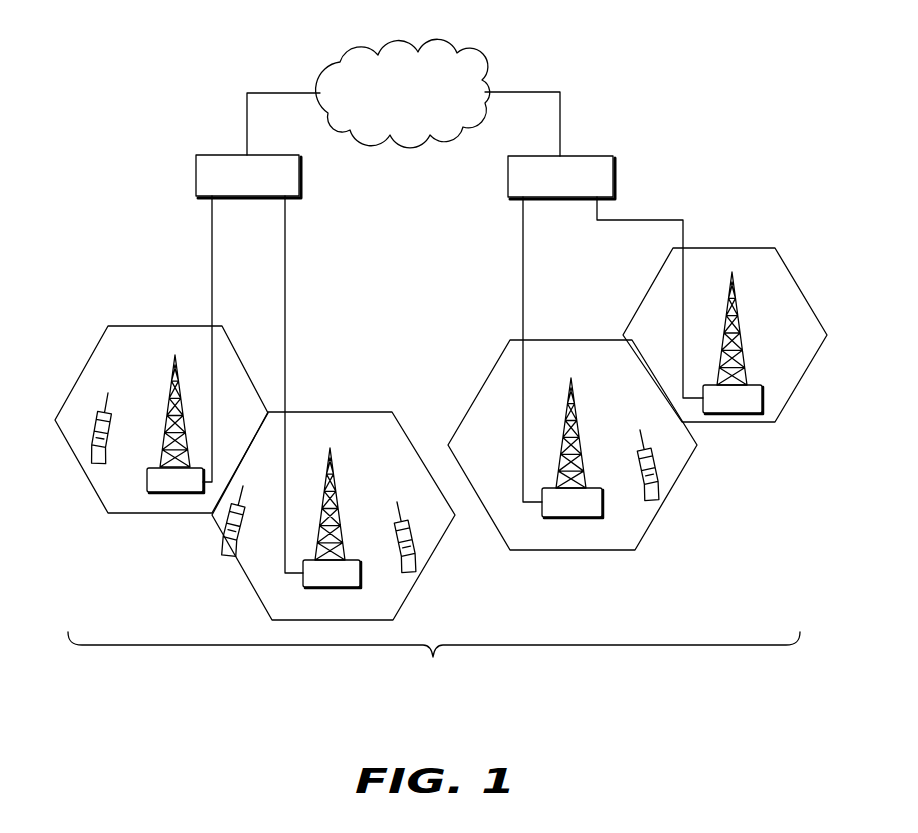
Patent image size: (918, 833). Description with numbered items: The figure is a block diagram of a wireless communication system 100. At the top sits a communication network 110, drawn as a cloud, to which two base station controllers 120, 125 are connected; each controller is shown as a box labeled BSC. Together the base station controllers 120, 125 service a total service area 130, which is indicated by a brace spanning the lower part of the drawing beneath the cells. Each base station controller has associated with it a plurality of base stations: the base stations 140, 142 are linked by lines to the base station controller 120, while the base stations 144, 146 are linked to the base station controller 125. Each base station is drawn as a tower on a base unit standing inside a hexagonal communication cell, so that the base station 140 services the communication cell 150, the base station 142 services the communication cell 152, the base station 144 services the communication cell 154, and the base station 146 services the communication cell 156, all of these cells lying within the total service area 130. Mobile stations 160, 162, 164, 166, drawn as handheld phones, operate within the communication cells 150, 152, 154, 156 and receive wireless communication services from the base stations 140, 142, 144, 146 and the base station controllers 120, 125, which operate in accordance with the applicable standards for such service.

The wireless communication system 100 is at (287, 713).
The communication network 110 is at (367, 44).
The base station controller 120 is at (206, 155).
The base station controller 125 is at (604, 156).
The total service area 130 is at (434, 661).
The base station 140 is at (169, 380).
The base station 142 is at (325, 478).
The base station 144 is at (566, 407).
The base station 146 is at (726, 301).
The communication cell 150 is at (119, 326).
The communication cell 152 is at (384, 412).
The communication cell 154 is at (628, 550).
The communication cell 156 is at (765, 422).
The mobile station 160 is at (121, 416).
The mobile station 162 is at (255, 497).
The mobile station 164 is at (386, 517).
The mobile station 166 is at (630, 447).